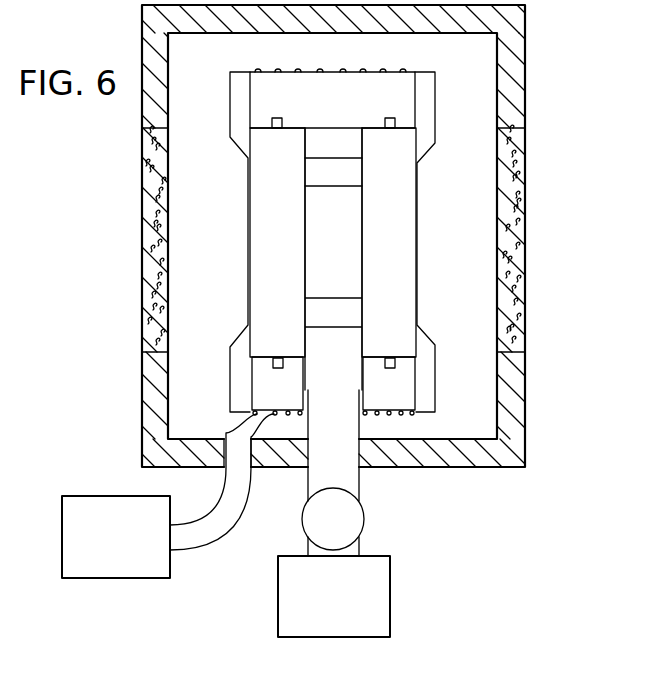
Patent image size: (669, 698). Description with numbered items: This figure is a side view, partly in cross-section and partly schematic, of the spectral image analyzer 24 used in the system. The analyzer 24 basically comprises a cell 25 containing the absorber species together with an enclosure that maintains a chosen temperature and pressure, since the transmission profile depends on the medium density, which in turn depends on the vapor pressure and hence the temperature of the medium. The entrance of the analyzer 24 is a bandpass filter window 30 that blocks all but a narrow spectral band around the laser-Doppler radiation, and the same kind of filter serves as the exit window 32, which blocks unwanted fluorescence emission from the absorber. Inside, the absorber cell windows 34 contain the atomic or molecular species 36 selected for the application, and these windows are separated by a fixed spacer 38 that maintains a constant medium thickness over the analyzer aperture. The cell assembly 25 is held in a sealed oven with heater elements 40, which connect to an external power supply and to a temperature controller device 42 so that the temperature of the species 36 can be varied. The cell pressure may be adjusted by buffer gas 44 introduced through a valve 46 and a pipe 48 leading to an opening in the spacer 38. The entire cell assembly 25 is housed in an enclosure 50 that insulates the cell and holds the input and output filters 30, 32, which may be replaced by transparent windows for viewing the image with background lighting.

The spectral image analyzer 24 is at (534, 29).
The cell 25 is at (348, 63).
The bandpass filter window 30 is at (147, 190).
The exit window 32 is at (498, 205).
The absorber cell windows 34 is at (248, 245).
The atomic or molecular species 36 is at (342, 236).
The fixed spacer 38 is at (328, 156).
The heater elements 40 is at (388, 415).
The temperature controller device 42 is at (150, 573).
The buffer gas 44 is at (378, 594).
The valve 46 is at (357, 522).
The pipe 48 is at (360, 483).
The enclosure 50 is at (505, 467).